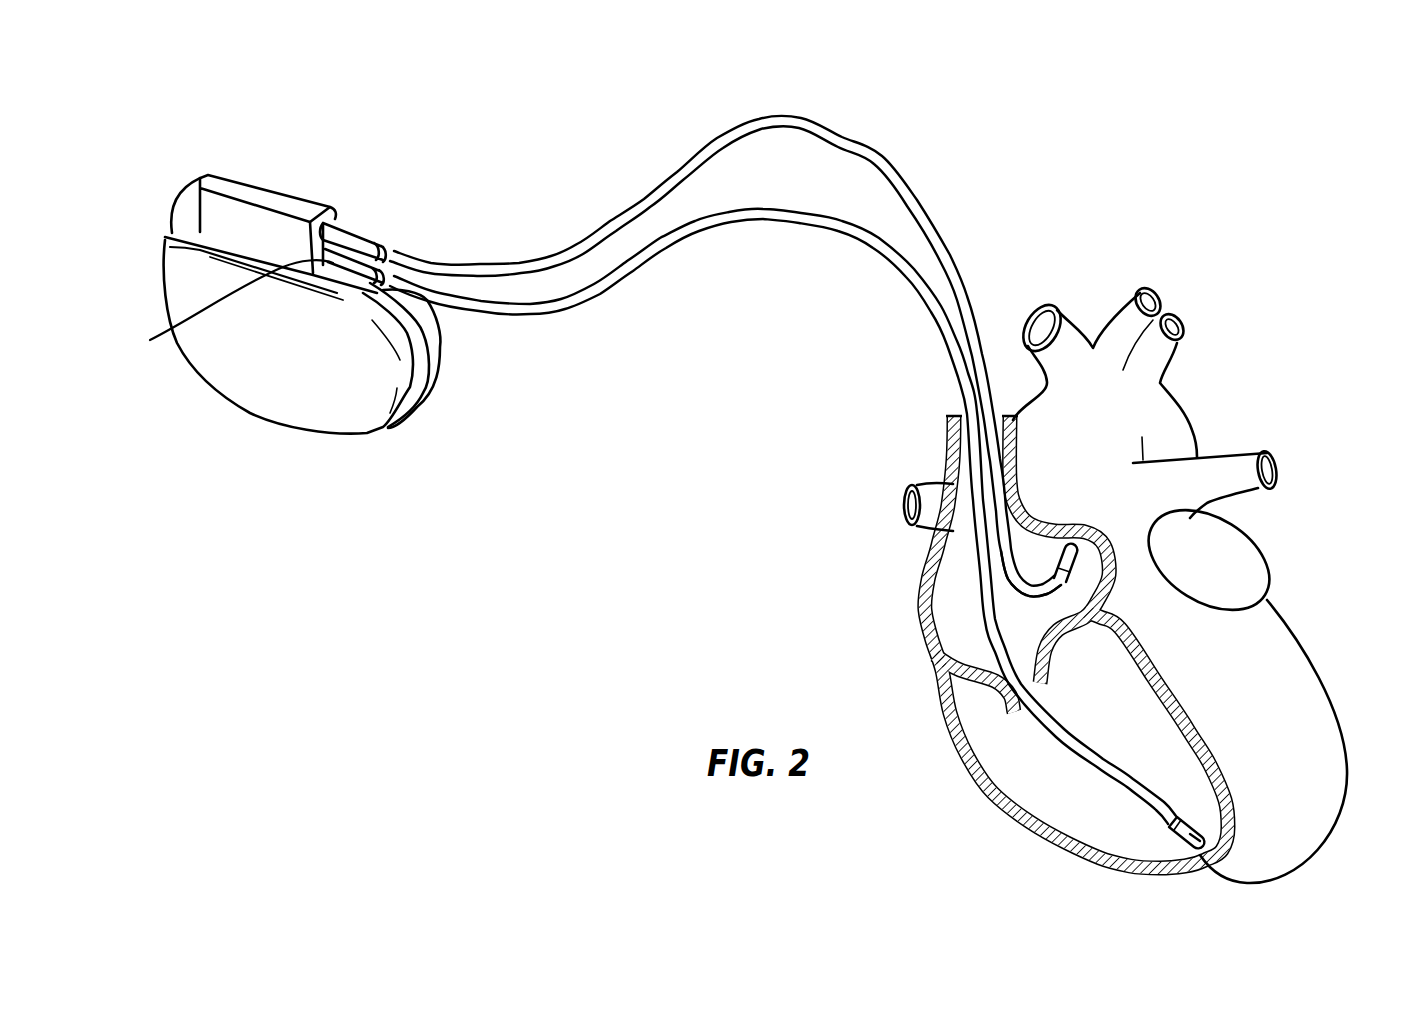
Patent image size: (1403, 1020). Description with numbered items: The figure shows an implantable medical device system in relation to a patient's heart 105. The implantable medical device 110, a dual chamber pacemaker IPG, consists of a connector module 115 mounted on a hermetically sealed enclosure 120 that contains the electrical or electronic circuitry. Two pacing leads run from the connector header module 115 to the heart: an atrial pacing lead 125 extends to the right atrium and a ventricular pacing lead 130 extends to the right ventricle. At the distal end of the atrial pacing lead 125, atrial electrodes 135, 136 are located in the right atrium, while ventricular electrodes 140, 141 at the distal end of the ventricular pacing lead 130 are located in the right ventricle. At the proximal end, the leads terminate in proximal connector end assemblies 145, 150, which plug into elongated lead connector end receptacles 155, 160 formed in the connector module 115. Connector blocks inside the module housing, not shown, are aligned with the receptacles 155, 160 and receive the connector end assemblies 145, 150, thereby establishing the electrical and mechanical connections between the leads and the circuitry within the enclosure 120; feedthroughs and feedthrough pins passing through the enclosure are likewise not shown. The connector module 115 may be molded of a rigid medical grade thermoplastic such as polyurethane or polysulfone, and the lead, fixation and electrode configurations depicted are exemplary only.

The patient's heart 105 is at (1295, 640).
The implantable medical device 110 is at (328, 307).
The connector module 115 is at (343, 234).
The hermetically sealed enclosure 120 is at (301, 438).
The atrial pacing lead 125 is at (733, 316).
The ventricular pacing lead 130 is at (821, 572).
The atrial electrode 135 is at (1053, 573).
The atrial electrode 136 is at (1073, 540).
The ventricular electrode 140 is at (1167, 830).
The ventricular electrode 141 is at (1200, 857).
The proximal connector end assembly 145 is at (368, 237).
The proximal connector end assembly 150 is at (367, 284).
The lead connector end receptacle 155 is at (332, 216).
The lead connector end receptacle 160 is at (152, 340).